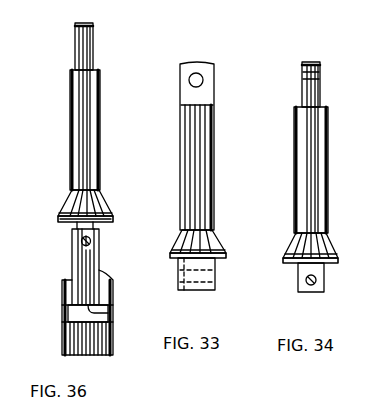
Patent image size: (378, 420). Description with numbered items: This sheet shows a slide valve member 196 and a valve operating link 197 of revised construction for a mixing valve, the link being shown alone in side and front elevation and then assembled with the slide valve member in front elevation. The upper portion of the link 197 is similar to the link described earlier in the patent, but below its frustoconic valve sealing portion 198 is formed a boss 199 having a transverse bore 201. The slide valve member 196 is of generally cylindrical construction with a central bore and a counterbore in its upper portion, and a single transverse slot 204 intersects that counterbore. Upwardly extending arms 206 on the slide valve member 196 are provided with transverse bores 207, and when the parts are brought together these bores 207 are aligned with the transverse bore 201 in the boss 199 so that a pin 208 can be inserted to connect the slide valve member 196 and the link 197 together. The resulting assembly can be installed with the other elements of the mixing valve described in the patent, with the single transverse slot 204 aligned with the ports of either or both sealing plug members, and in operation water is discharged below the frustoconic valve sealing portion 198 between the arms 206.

In FIG. 36, the slide valve member 196 is at (85, 288).
In FIG. 36, the valve operating link 197 is at (97, 144).
In FIG. 33, the valve operating link 197 is at (252, 154).
In FIG. 34, the valve operating link 197 is at (363, 154).
In FIG. 36, the frustoconic valve sealing portion 198 is at (66, 200).
In FIG. 33, the frustoconic valve sealing portion 198 is at (184, 240).
In FIG. 34, the frustoconic valve sealing portion 198 is at (322, 243).
In FIG. 33, the boss 199 is at (201, 290).
In FIG. 34, the boss 199 is at (320, 277).
In FIG. 33, the transverse bore 201 is at (184, 276).
In FIG. 34, the transverse bore 201 is at (311, 286).
In FIG. 36, the single transverse slot 204 is at (110, 312).
In FIG. 36, the upwardly extending arms 206 is at (73, 250).
In FIG. 36, the transverse bores 207 is at (92, 246).
In FIG. 36, the pin 208 is at (82, 242).